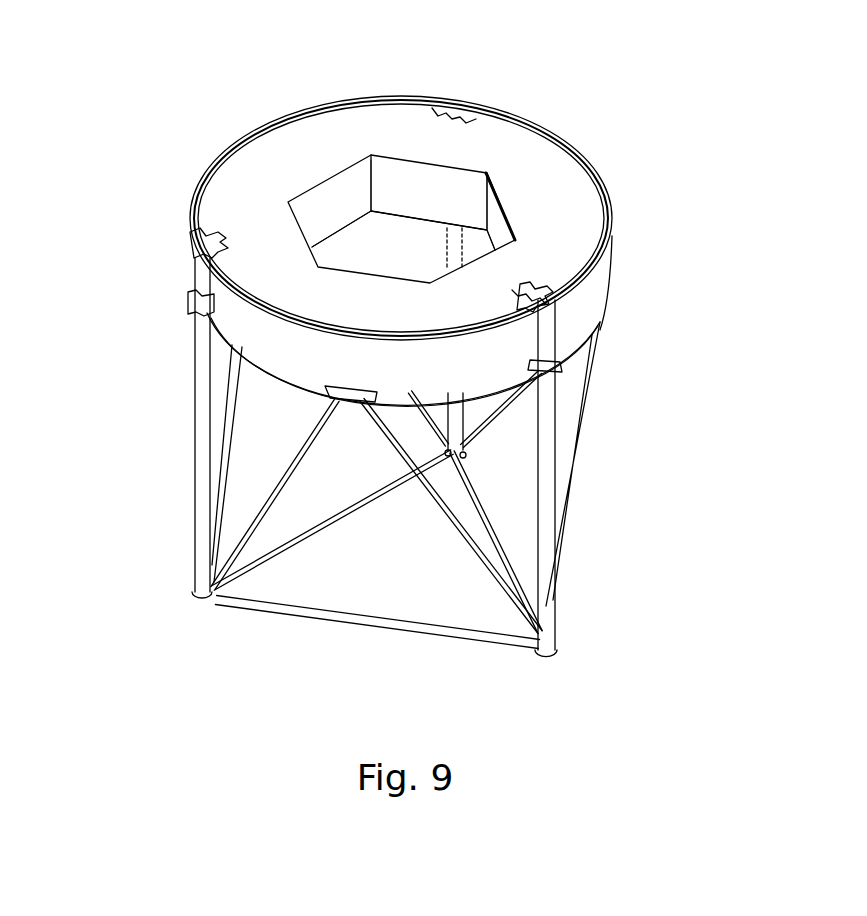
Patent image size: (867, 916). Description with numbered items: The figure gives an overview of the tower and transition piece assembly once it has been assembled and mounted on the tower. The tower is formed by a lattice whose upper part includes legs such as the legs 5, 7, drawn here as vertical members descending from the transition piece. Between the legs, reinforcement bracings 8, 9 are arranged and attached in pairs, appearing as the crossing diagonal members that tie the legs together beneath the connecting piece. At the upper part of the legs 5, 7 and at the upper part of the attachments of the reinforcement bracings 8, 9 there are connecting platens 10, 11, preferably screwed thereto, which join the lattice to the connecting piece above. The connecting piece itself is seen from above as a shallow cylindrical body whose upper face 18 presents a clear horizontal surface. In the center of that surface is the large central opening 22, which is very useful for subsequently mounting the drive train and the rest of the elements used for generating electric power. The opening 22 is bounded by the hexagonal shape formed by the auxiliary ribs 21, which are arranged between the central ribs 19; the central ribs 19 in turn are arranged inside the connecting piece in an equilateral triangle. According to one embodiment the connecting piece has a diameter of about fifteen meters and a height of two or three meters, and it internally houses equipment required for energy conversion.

The leg 5 is at (192, 477).
The leg 7 is at (543, 562).
The reinforcement bracing 8 is at (287, 480).
The reinforcement bracing 9 is at (447, 517).
The connecting platen 10 is at (190, 240).
The connecting platen 11 is at (573, 360).
The upper face 18 is at (507, 138).
The central rib 19 is at (327, 178).
The auxiliary rib 21 is at (428, 193).
The central opening 22 is at (395, 248).